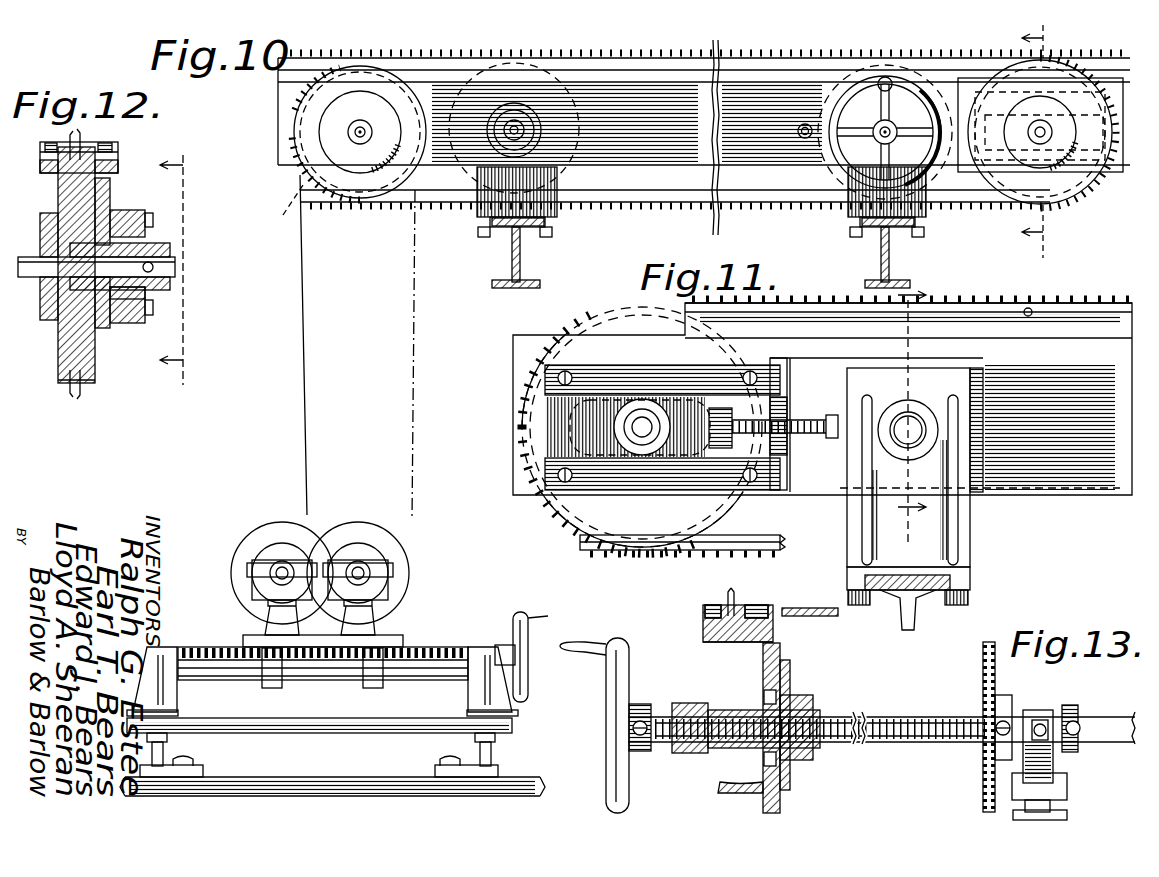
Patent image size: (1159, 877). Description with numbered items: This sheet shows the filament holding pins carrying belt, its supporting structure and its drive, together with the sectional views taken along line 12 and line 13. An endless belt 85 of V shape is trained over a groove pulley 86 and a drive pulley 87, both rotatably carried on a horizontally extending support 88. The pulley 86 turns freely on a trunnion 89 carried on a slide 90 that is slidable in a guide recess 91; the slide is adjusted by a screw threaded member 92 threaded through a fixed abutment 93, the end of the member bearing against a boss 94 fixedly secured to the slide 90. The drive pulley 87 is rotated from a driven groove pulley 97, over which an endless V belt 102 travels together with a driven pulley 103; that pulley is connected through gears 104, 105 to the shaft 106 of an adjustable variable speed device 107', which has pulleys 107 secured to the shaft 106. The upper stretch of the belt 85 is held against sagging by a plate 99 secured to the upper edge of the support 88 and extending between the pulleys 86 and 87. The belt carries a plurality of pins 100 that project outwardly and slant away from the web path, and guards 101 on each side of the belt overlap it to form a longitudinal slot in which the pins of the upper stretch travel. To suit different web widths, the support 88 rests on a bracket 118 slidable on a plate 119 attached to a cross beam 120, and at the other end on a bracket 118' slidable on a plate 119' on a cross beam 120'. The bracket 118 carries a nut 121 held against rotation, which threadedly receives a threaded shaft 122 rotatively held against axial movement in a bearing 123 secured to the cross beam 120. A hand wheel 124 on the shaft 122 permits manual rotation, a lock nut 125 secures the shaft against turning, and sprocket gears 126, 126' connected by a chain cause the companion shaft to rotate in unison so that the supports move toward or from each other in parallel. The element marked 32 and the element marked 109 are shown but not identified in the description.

In FIG. 10, the section line 12— 12 is at (1047, 145).
In FIG. 11, the section line 13— 13 is at (917, 405).
In FIG. 13, the plate 32 is at (825, 620).
In FIG. 10, the endless belt 85 is at (788, 200).
In FIG. 12, the endless belt 85 is at (88, 387).
In FIG. 11, the endless belt 85 is at (695, 547).
In FIG. 13, the endless belt 85 is at (728, 643).
In FIG. 10, the groove pulley 86 is at (1076, 182).
In FIG. 12, the groove pulley 86 is at (58, 352).
In FIG. 11, the groove pulley 86 is at (580, 533).
In FIG. 10, the drive pulley 87 is at (356, 190).
In FIG. 10, the support 88 is at (762, 158).
In FIG. 12, the support 88 is at (103, 328).
In FIG. 11, the support 88 is at (1087, 492).
In FIG. 13, the support 88 is at (772, 668).
In FIG. 12, the trunnion 89 is at (174, 263).
In FIG. 12, the slide 90 is at (128, 298).
In FIG. 11, the slide 90 is at (555, 430).
In FIG. 12, the guide recess 91 is at (140, 213).
In FIG. 11, the screw threaded member 92 is at (790, 428).
In FIG. 11, the fixed abutment 93 is at (783, 398).
In FIG. 11, the boss 94 is at (722, 448).
In FIG. 10, the driven groove pulley 97 is at (281, 345).
In FIG. 12, the plate 99 is at (118, 163).
In FIG. 13, the plate 99 is at (703, 632).
In FIG. 12, the pin 100 is at (78, 145).
In FIG. 11, the pin 100 is at (985, 292).
In FIG. 13, the pin 100 is at (738, 591).
In FIG. 12, the guard 101 is at (63, 144).
In FIG. 11, the guard 101 is at (1043, 303).
In FIG. 13, the guard 101 is at (705, 612).
In FIG. 10, the endless V belt 102 is at (413, 378).
In FIG. 10, the driven pulley 103 is at (408, 578).
In FIG. 10, the gear 104 is at (362, 532).
In FIG. 10, the gear 105 is at (288, 535).
In FIG. 10, the shaft 106 is at (276, 576).
In FIG. 10, the pulley 107 is at (282, 550).
In FIG. 10, the adjustable variable speed device 107' is at (486, 648).
In FIG. 10, the plate 109 is at (300, 505).
In FIG. 10, the bracket 118 is at (864, 210).
In FIG. 11, the bracket 118 is at (938, 499).
In FIG. 10, the bracket 118' is at (531, 202).
In FIG. 10, the plate 119 is at (913, 226).
In FIG. 11, the plate 119 is at (946, 578).
In FIG. 10, the plate 119' is at (499, 246).
In FIG. 10, the cross beam 120 is at (907, 257).
In FIG. 13, the cross beam 120 is at (1060, 796).
In FIG. 10, the cross beam 120' is at (534, 257).
In FIG. 11, the nut 121 is at (905, 414).
In FIG. 13, the nut 121 is at (820, 722).
In FIG. 11, the threaded shaft 122 is at (912, 428).
In FIG. 13, the threaded shaft 122 is at (912, 724).
In FIG. 13, the bearing 123 is at (1053, 770).
In FIG. 10, the hand wheel 124 is at (832, 150).
In FIG. 13, the hand wheel 124 is at (630, 688).
In FIG. 10, the lock nut 125 is at (797, 131).
In FIG. 13, the lock nut 125 is at (685, 705).
In FIG. 10, the sprocket gear 126 is at (847, 132).
In FIG. 13, the sprocket gear 126 is at (968, 727).
In FIG. 10, the sprocket gear 126' is at (554, 128).